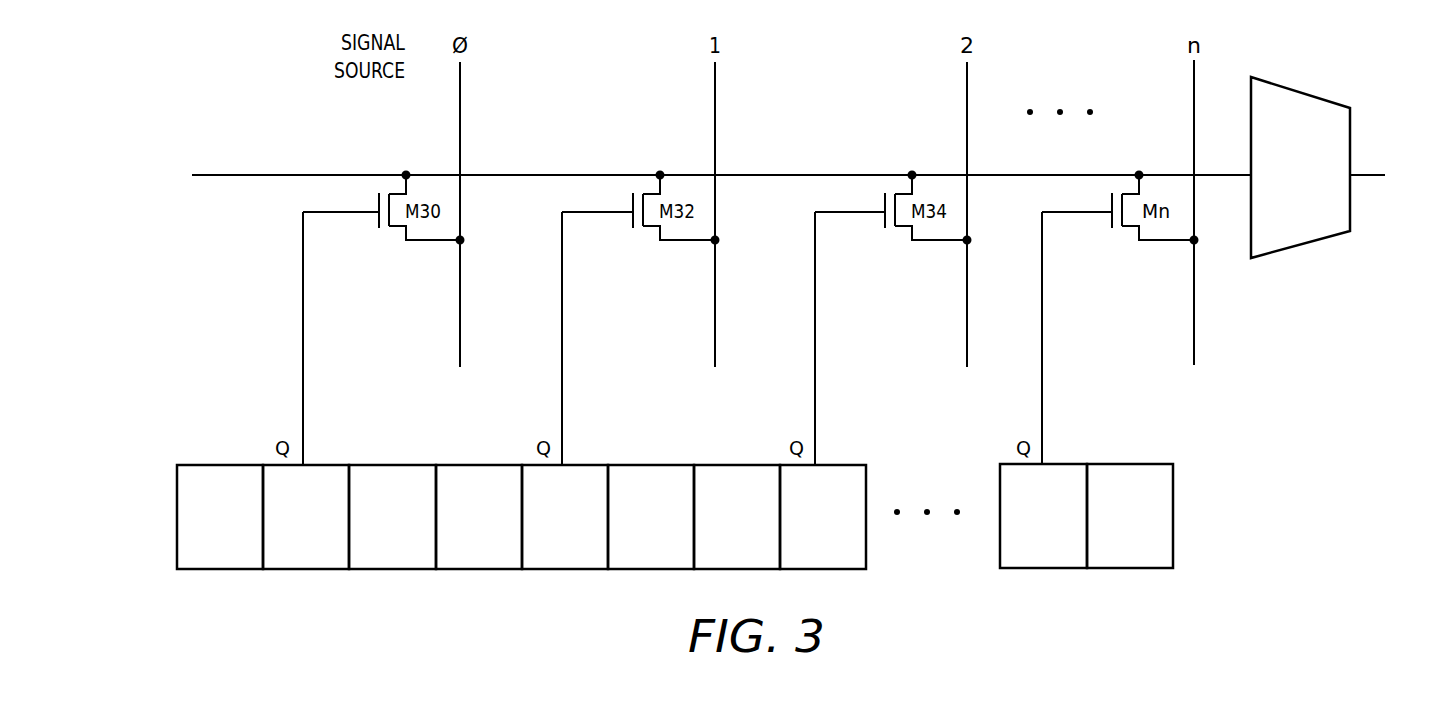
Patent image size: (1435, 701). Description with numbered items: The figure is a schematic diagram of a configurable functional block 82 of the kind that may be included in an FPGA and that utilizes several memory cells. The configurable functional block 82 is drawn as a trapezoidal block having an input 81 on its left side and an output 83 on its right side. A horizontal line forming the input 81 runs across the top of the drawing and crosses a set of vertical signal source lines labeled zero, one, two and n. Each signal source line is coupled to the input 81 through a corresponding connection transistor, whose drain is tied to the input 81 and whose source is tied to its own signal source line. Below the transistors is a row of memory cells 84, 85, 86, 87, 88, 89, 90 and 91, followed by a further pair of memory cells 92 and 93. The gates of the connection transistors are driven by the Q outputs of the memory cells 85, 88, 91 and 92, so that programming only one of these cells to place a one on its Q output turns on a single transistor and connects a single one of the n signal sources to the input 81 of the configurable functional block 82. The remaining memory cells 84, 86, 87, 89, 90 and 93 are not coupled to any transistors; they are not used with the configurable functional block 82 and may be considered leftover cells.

The input 81 is at (245, 175).
The configurable functional block 82 is at (1300, 167).
The output 83 is at (1367, 175).
The memory cell 84 is at (220, 517).
The memory cell 85 is at (306, 517).
The memory cell 86 is at (392, 517).
The memory cell 87 is at (479, 517).
The memory cell 88 is at (565, 517).
The memory cell 89 is at (651, 517).
The memory cell 90 is at (737, 517).
The memory cell 91 is at (823, 517).
The memory cell 92 is at (1043, 516).
The memory cell 93 is at (1130, 516).